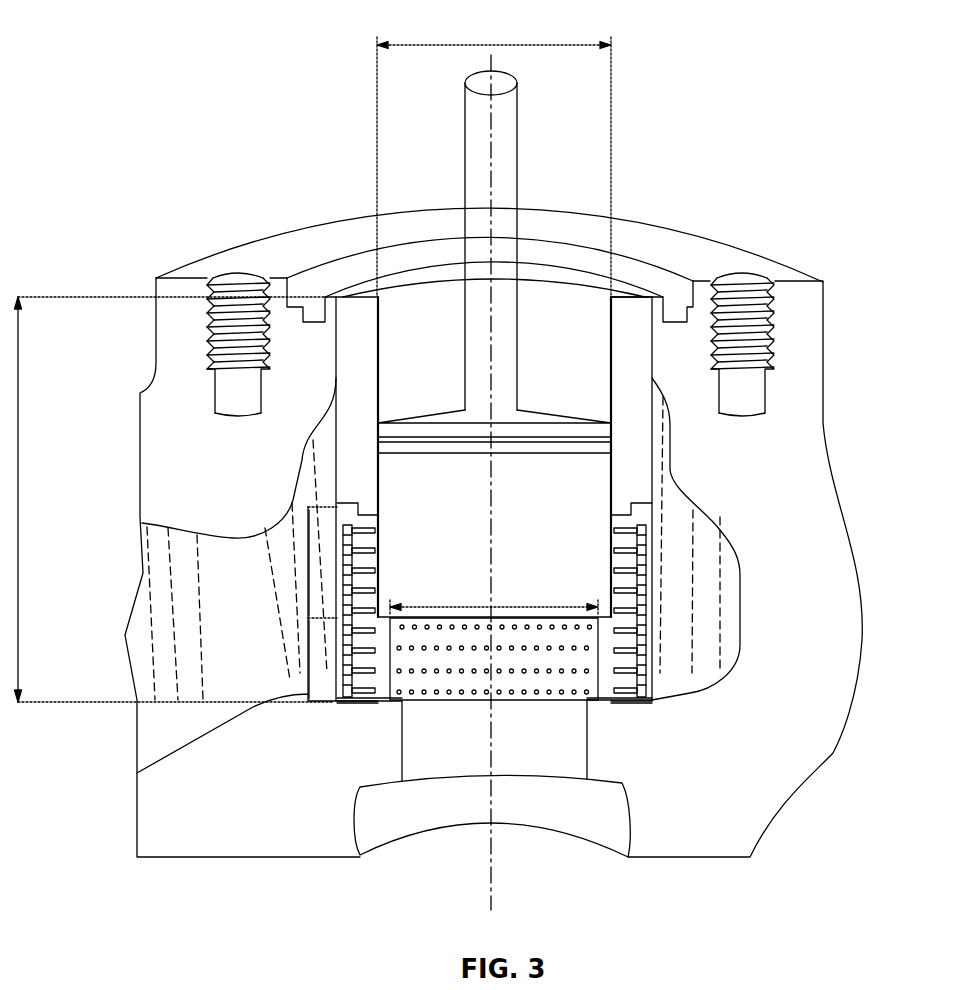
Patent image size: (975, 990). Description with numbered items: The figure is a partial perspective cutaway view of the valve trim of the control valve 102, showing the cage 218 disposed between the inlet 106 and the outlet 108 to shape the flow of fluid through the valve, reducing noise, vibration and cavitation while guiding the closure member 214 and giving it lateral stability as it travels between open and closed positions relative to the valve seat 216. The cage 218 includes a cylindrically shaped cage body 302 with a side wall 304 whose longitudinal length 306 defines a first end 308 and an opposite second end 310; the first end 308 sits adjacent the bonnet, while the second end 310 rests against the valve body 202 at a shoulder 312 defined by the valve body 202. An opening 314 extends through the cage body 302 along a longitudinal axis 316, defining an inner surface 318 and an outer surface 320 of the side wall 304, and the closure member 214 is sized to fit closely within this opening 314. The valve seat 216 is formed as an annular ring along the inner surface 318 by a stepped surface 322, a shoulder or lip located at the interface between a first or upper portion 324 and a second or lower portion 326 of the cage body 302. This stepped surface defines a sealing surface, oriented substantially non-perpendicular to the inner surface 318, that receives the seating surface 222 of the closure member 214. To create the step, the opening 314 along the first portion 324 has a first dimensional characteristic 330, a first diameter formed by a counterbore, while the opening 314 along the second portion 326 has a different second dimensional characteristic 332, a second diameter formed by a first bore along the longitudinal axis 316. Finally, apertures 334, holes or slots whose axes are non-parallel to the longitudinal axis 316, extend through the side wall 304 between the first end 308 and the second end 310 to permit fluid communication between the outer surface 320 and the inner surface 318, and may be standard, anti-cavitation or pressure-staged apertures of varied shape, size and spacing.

The control valve 102 is at (470, 460).
The inlet 106 is at (140, 599).
The outlet 108 is at (442, 832).
The valve body 202 is at (852, 510).
The closure member 214 is at (503, 468).
The valve seat 216 is at (650, 657).
The cage 218 is at (633, 297).
The seating surface 222 is at (497, 622).
The cage body 302 is at (353, 400).
The side wall 304 is at (627, 483).
The longitudinal length 306 is at (18, 482).
The first end 308 is at (360, 285).
The second end 310 is at (367, 707).
The shoulder 312 is at (643, 702).
The opening 314 is at (380, 345).
The longitudinal axis 316 is at (500, 900).
The inner surface 318 is at (608, 325).
The outer surface 320 is at (760, 405).
The stepped surface 322 is at (380, 628).
The first portion 324 is at (307, 560).
The second portion 326 is at (308, 660).
The first dimensional characteristic 330 is at (450, 45).
The second dimensional characteristic 332 is at (525, 607).
The apertures 334 is at (630, 598).